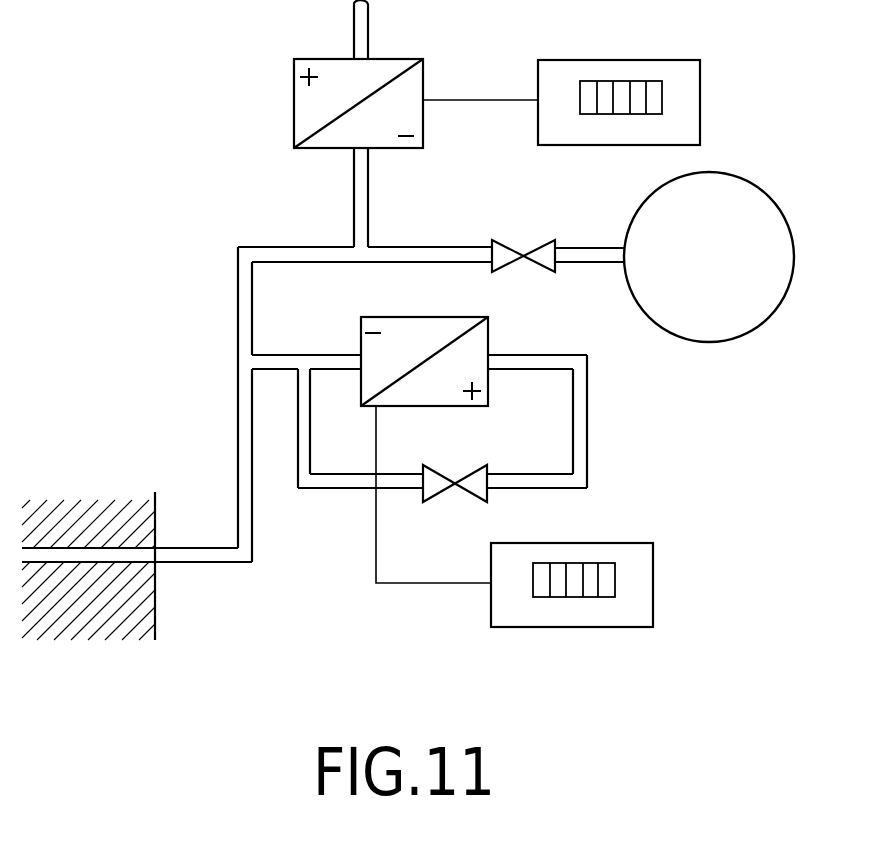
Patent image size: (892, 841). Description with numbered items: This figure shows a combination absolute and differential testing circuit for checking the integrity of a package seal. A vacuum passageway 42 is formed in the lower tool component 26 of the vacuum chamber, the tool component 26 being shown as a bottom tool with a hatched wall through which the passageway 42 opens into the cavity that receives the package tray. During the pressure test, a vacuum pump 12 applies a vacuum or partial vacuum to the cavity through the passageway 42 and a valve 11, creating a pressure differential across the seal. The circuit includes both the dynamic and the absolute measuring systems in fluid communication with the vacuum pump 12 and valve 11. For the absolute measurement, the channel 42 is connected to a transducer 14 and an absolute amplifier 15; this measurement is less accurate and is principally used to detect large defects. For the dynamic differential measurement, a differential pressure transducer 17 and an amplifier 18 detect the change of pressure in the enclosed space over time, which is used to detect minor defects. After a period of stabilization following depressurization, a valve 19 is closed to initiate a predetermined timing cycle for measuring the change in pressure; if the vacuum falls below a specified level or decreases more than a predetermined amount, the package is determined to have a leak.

The valve 11 is at (527, 244).
The vacuum pump 12 is at (707, 342).
The transducer 14 is at (294, 98).
The absolute amplifier 15 is at (600, 60).
The differential pressure transducer 17 is at (489, 346).
The amplifier 18 is at (596, 543).
The valve 19 is at (470, 470).
The tool component 26 is at (138, 613).
The vacuum passageway 42 is at (150, 557).